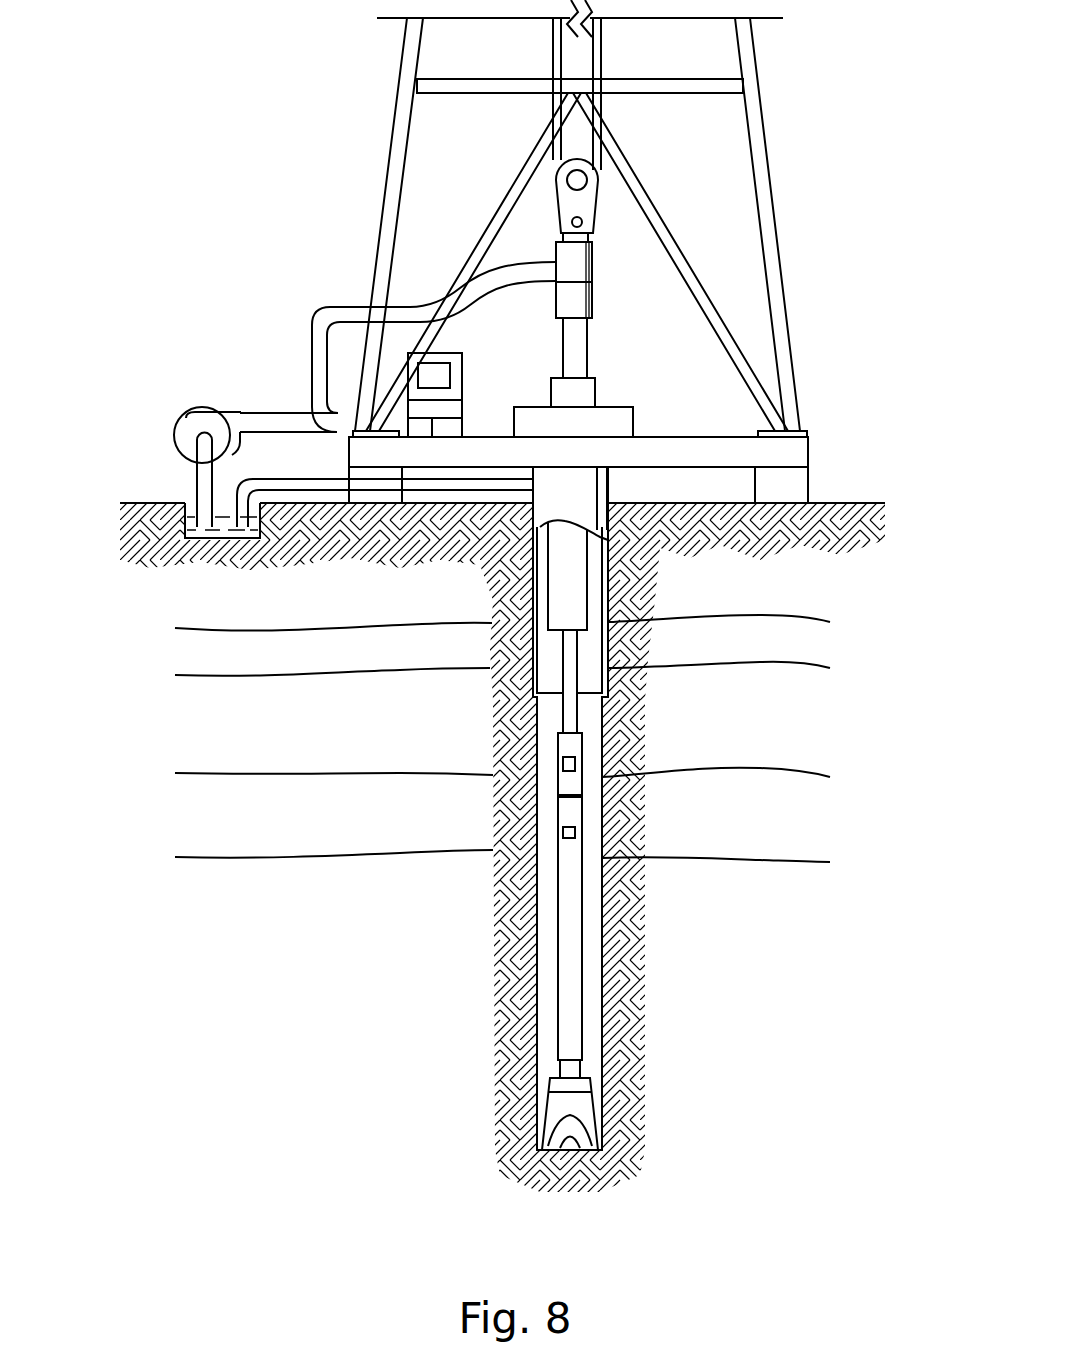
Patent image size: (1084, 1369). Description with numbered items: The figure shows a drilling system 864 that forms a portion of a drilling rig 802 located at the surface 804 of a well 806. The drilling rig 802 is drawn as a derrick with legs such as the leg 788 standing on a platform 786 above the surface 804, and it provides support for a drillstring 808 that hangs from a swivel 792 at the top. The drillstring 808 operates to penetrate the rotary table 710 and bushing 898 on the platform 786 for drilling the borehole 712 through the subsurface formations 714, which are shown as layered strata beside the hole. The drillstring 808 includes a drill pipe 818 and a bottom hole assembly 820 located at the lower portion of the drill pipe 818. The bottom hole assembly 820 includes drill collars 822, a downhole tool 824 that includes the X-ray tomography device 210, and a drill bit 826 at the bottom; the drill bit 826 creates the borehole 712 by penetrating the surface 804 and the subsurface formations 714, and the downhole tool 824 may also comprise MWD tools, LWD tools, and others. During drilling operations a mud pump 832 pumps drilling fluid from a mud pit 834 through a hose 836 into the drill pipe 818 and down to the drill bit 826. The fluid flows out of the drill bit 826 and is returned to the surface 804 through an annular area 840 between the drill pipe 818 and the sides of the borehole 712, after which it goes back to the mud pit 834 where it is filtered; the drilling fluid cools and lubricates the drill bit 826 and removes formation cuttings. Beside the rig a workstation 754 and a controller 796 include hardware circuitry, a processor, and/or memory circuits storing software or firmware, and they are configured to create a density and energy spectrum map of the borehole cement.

The drilling system 864 is at (262, 110).
The derrick leg 788 is at (758, 108).
The drilling rig 802 is at (784, 212).
The hose 836 is at (325, 310).
The swivel 792 is at (452, 345).
The workstation 754 is at (463, 365).
The rotary table 710 is at (541, 406).
The bushing 898 is at (595, 393).
The controller 796 is at (452, 377).
The mud pump 832 is at (210, 412).
The drilling platform 786 is at (812, 447).
The surface 804 is at (834, 503).
The well 806 is at (622, 497).
The mud pit 834 is at (207, 535).
The drill collars 822 is at (587, 588).
The drill pipe 818 is at (573, 672).
The annular area 840 is at (592, 740).
The subsurface formations 714 is at (157, 625).
The X-ray tomography device 210 is at (580, 830).
The bottom hole assembly 820 is at (488, 690).
The drillstring 808 is at (591, 929).
The borehole 712 is at (602, 1005).
The downhole tool 824 is at (570, 1040).
The drill bit 826 is at (577, 1103).